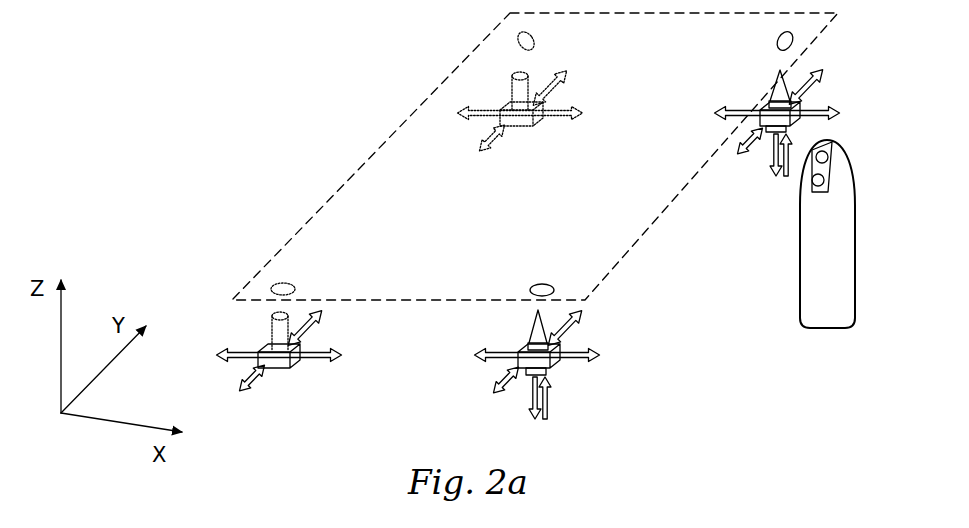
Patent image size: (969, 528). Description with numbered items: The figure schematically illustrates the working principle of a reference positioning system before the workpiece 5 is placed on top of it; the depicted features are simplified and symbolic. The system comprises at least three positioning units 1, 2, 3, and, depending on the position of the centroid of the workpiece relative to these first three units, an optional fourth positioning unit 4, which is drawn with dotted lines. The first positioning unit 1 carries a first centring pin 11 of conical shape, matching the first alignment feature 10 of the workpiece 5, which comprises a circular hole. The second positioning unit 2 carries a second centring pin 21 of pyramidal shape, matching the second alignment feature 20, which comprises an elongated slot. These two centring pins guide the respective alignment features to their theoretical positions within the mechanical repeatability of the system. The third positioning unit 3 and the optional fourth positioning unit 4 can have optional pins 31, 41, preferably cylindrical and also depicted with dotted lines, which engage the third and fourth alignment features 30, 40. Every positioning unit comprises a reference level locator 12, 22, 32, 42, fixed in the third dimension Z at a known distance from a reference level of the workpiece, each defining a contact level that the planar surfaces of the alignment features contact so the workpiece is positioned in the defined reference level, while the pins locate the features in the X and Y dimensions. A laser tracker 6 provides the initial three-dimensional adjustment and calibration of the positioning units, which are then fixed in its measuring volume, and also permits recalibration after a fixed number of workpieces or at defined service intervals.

The first positioning unit 1 is at (538, 362).
The first alignment feature 10 is at (540, 285).
The first centring pin 11 is at (540, 338).
The reference level locator 12 is at (522, 353).
The second positioning unit 2 is at (753, 140).
The second alignment feature 20 is at (782, 43).
The second centring pin 21 is at (778, 90).
The reference level locator 22 is at (752, 115).
The third positioning unit 3 is at (276, 361).
The third alignment feature 30 is at (278, 287).
The optional pin 31 is at (278, 338).
The reference level locator 32 is at (262, 352).
The fourth positioning unit 4 is at (493, 130).
The fourth alignment feature 40 is at (525, 43).
The optional pin 41 is at (517, 98).
The reference level locator 42 is at (505, 113).
The workpiece 5 is at (315, 222).
The laser tracker 6 is at (787, 280).